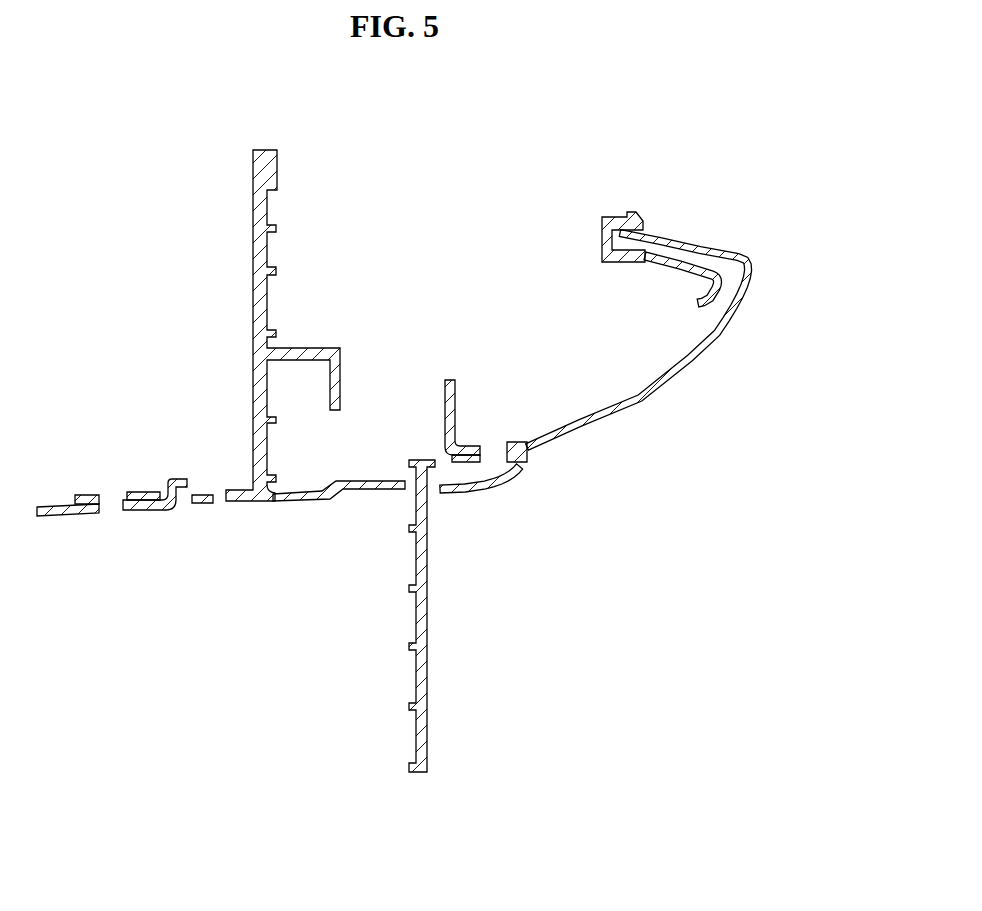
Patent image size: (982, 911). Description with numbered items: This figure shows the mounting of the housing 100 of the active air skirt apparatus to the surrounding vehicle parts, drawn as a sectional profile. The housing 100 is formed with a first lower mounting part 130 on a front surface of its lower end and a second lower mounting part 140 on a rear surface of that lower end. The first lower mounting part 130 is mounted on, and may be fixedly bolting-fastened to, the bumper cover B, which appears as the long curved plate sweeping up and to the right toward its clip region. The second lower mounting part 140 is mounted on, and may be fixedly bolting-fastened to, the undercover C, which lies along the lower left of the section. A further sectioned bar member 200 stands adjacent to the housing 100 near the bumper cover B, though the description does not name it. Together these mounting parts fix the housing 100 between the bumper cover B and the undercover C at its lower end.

The housing 100 is at (254, 229).
The first lower mounting part 130 is at (460, 443).
The second lower mounting part 140 is at (143, 490).
The second panel member 200 is at (427, 640).
The bumper cover B is at (640, 402).
The undercover C is at (145, 511).